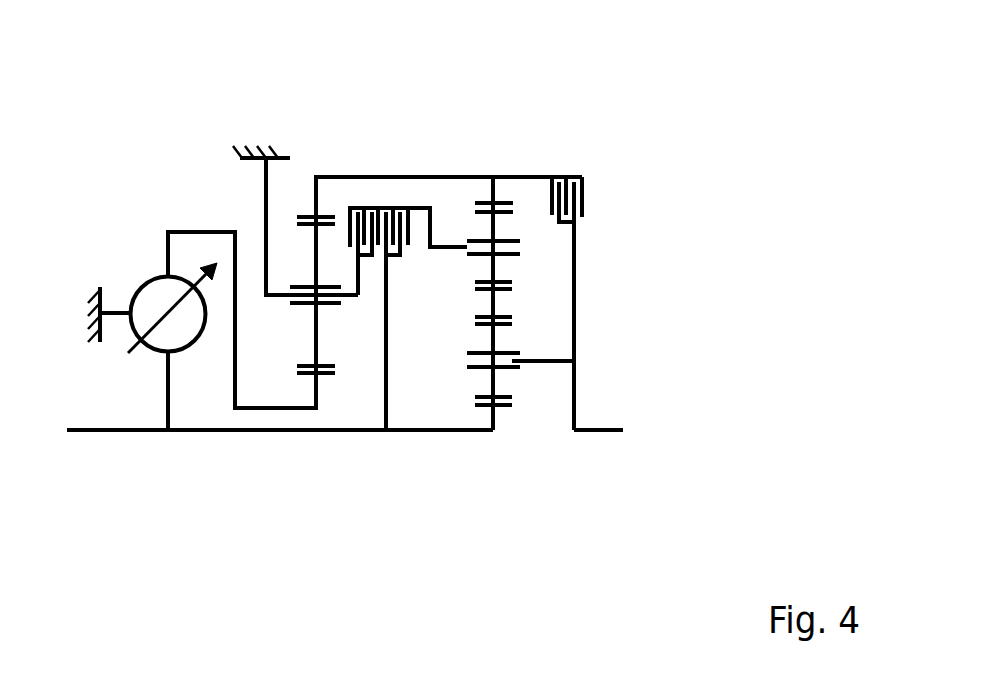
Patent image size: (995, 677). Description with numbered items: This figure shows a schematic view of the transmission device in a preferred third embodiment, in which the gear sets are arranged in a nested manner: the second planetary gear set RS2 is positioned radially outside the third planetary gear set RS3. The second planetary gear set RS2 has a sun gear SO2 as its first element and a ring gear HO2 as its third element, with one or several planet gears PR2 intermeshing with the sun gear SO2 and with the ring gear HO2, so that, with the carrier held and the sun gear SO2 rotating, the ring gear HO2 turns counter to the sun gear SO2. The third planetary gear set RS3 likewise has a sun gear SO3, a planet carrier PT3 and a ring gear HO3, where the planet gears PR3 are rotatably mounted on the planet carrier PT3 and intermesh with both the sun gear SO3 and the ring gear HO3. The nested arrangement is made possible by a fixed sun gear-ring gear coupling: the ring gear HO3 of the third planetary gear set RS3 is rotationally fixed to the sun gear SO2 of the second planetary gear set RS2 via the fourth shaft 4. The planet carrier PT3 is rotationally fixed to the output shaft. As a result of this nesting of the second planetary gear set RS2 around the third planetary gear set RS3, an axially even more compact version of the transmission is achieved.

The fourth shaft 4 is at (490, 303).
The ring gear HO2 is at (503, 203).
The sun gear SO2 is at (502, 290).
The planet gears PR2 is at (500, 227).
The ring gear HO3 is at (502, 313).
The sun gear SO3 is at (505, 407).
The planet gears PR3 is at (493, 383).
The planet carrier PT3 is at (540, 362).
The second planetary gear set RS2 is at (495, 440).
The third planetary gear set RS3 is at (496, 472).